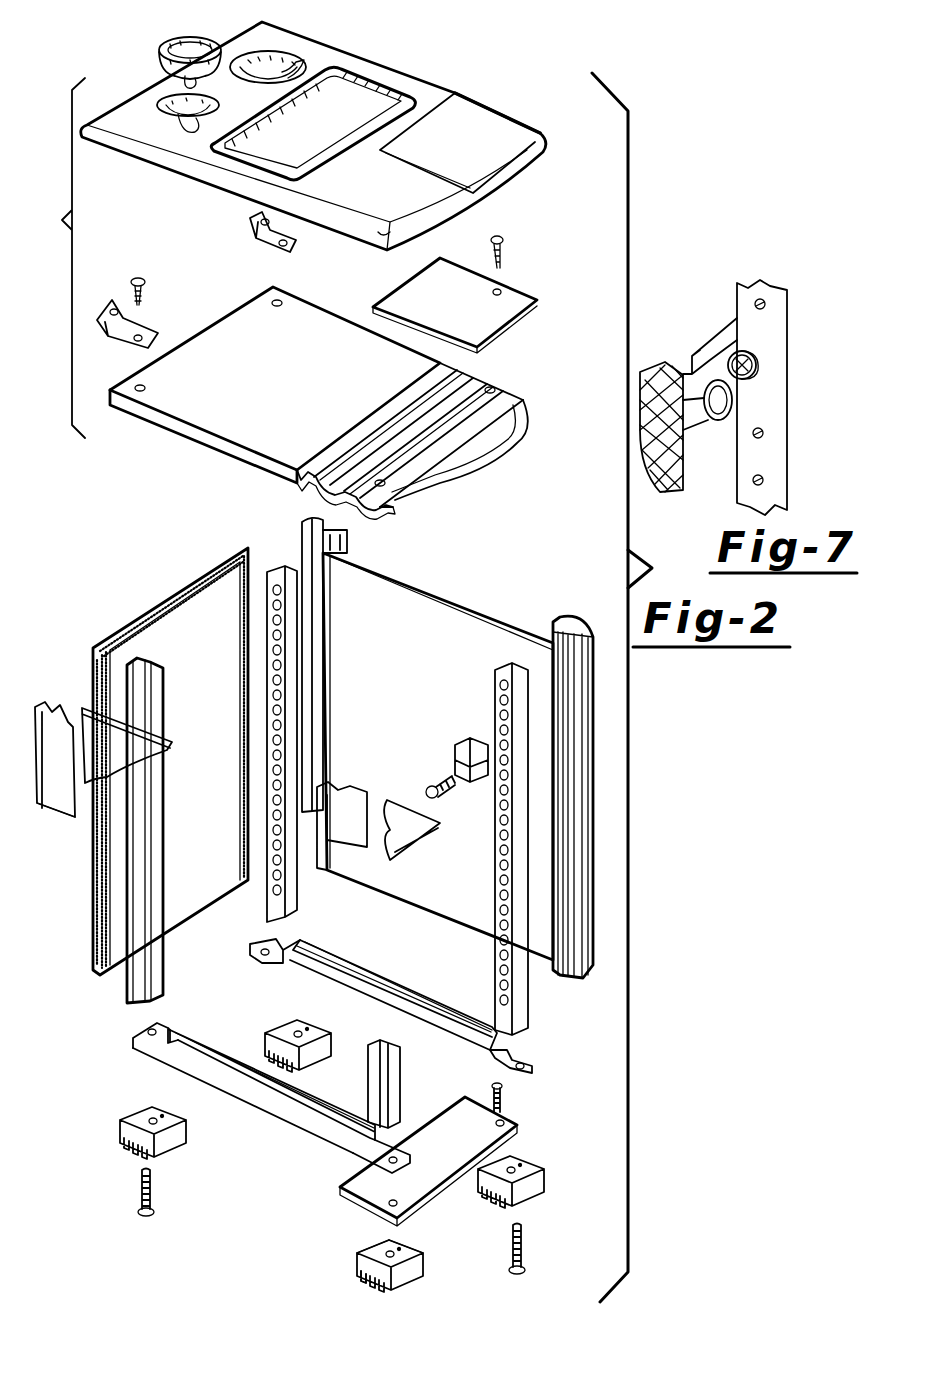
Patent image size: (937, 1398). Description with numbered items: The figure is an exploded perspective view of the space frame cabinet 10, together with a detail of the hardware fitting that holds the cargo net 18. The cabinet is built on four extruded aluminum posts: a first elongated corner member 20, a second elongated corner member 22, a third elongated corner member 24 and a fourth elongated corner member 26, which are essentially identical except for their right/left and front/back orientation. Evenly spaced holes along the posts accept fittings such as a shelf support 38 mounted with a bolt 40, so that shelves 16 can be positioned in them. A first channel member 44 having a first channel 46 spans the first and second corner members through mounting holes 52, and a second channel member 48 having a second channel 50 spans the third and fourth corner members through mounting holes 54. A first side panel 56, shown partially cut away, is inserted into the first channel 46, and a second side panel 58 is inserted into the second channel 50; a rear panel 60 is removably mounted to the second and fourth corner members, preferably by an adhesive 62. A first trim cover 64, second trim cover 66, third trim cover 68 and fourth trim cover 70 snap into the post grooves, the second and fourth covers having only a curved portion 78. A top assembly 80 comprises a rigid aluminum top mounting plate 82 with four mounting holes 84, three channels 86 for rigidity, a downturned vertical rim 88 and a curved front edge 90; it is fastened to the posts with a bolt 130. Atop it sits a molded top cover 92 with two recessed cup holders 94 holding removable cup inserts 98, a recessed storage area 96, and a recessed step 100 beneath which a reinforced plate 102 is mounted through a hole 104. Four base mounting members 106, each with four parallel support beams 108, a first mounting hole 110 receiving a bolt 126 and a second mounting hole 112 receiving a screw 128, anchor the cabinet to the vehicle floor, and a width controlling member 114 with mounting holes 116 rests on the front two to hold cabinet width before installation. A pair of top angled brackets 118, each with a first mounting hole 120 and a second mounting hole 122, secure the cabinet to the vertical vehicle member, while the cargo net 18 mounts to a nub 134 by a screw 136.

In FIG. 2, the space frame cabinet 10 is at (638, 687).
In FIG. 2, the shelves 16 is at (432, 826).
In FIG. 7, the cargo net 18 is at (660, 480).
In FIG. 2, the first elongated corner member 20 is at (372, 1085).
In FIG. 2, the second elongated corner member 22 is at (138, 981).
In FIG. 2, the third elongated corner member 24 is at (513, 1005).
In FIG. 2, the fourth elongated corner member 26 is at (265, 912).
In FIG. 2, the shelf support 38 is at (463, 745).
In FIG. 2, the bolt 40 is at (430, 785).
In FIG. 2, the first channel member 44 is at (289, 1066).
In FIG. 2, the first channel 46 is at (225, 1060).
In FIG. 2, the second channel member 48 is at (419, 1000).
In FIG. 2, the second channel 50 is at (350, 977).
In FIG. 2, the mounting holes 52 is at (167, 1040).
In FIG. 2, the mounting holes 54 is at (258, 964).
In FIG. 2, the first side panel 56 is at (85, 710).
In FIG. 2, the second side panel 58 is at (425, 590).
In FIG. 2, the rear panel 60 is at (180, 614).
In FIG. 2, the adhesive 62 is at (100, 648).
In FIG. 2, the first trim cover 64 is at (352, 820).
In FIG. 2, the second trim cover 66 is at (58, 800).
In FIG. 2, the third trim cover 68 is at (583, 662).
In FIG. 2, the fourth trim cover 70 is at (342, 547).
In FIG. 2, the curved portion 78 is at (40, 712).
In FIG. 2, the top assembly 80 is at (313, 260).
In FIG. 2, the top mounting plate 82 is at (357, 387).
In FIG. 2, the mounting holes 84 is at (280, 304).
In FIG. 2, the channels 86 is at (440, 374).
In FIG. 2, the downturned vertical rim 88 is at (215, 448).
In FIG. 2, the curved front edge 90 is at (478, 460).
In FIG. 2, the top cover 92 is at (455, 93).
In FIG. 2, the recessed cup holders 94 is at (282, 58).
In FIG. 2, the recessed storage area 96 is at (378, 98).
In FIG. 2, the cup inserts 98 is at (188, 42).
In FIG. 2, the recessed step 100 is at (493, 133).
In FIG. 2, the reinforced plate 102 is at (490, 291).
In FIG. 2, the hole 104 is at (517, 303).
In FIG. 2, the base mounting members 106 is at (310, 1038).
In FIG. 2, the support beams 108 is at (363, 1285).
In FIG. 2, the first mounting hole 110 is at (360, 1256).
In FIG. 2, the second mounting hole 112 is at (405, 1255).
In FIG. 2, the width controlling member 114 is at (424, 1164).
In FIG. 2, the mounting holes 116 is at (505, 1122).
In FIG. 2, the top angled brackets 118 is at (184, 290).
In FIG. 2, the first mounting hole 120 is at (152, 322).
In FIG. 2, the second mounting hole 122 is at (108, 305).
In FIG. 2, the bolt 126 is at (150, 1213).
In FIG. 2, the screw 128 is at (500, 1107).
In FIG. 2, the bolt 130 is at (143, 276).
In FIG. 7, the nub 134 is at (763, 369).
In FIG. 7, the screw 136 is at (768, 333).